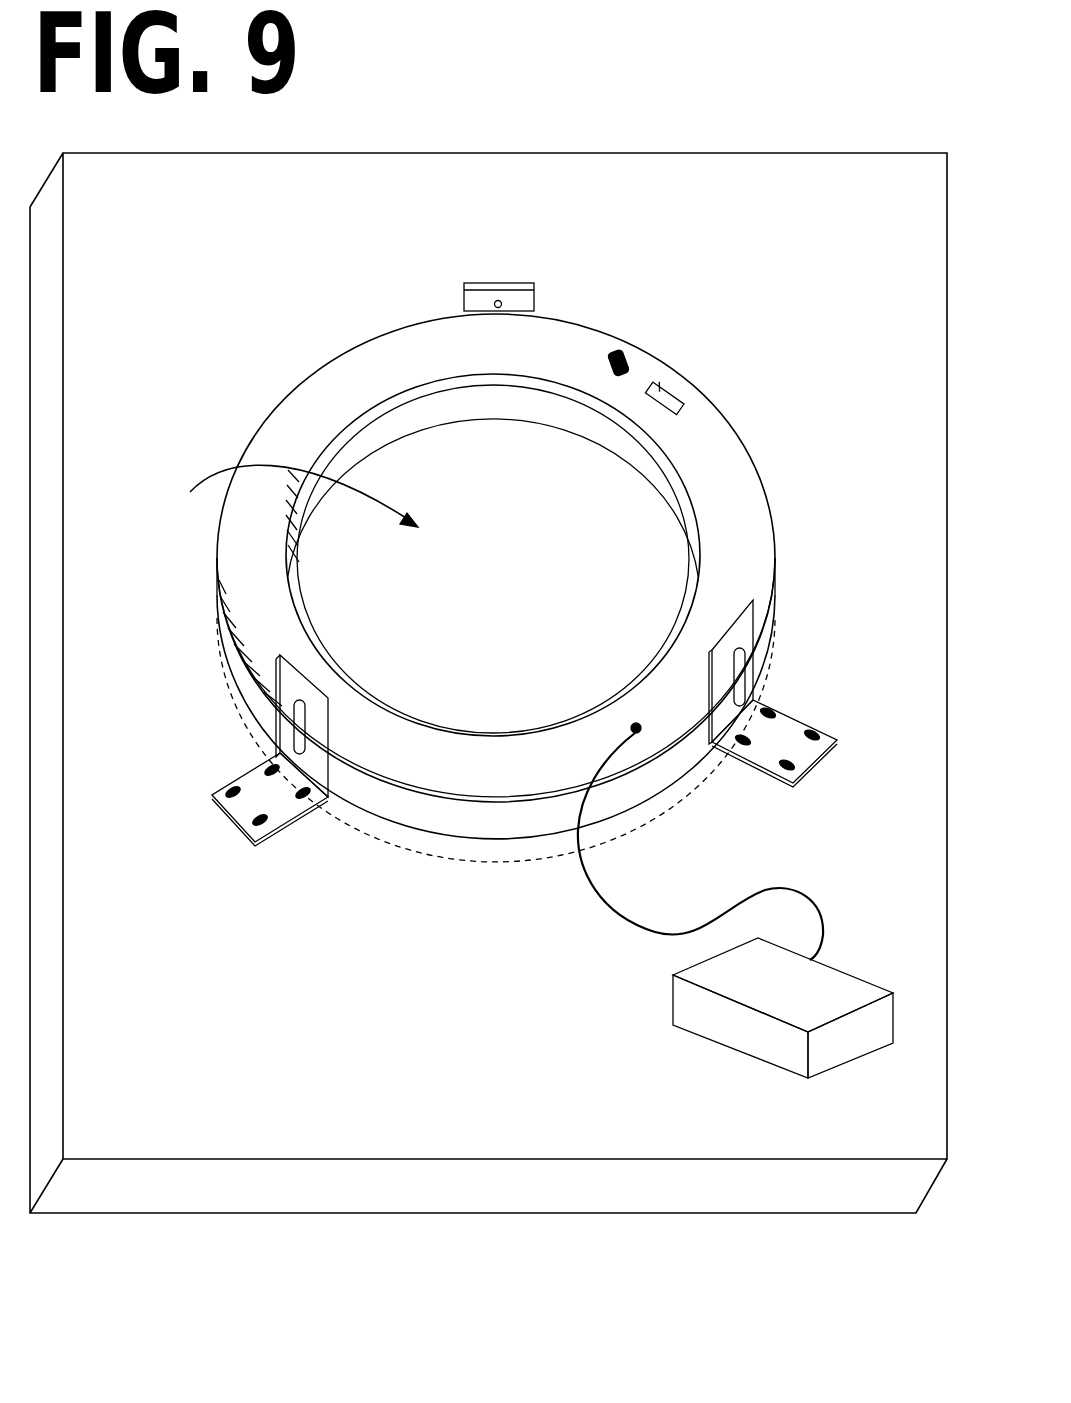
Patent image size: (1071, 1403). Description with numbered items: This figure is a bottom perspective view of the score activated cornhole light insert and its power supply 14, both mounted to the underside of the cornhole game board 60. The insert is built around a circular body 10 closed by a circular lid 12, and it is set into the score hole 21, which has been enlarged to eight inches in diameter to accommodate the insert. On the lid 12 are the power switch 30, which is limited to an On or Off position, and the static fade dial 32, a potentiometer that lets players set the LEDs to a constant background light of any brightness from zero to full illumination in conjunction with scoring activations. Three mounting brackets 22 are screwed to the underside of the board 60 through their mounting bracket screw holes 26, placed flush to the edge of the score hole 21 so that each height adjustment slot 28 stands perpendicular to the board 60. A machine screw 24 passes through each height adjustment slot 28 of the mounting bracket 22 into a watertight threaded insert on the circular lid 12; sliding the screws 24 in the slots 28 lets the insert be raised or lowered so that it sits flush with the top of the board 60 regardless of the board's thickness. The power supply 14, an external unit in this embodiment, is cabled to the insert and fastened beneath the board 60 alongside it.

The circular body 10 is at (562, 418).
The circular lid 12 is at (362, 372).
The power supply 14 is at (767, 1037).
The score hole 21 is at (277, 497).
The mounting bracket 22 is at (520, 577).
The machine screw 24 is at (292, 800).
The mounting bracket screw hole 26 is at (212, 798).
The height adjustment slot 28 is at (449, 304).
The power switch 30 is at (690, 412).
The static fade dial 32 is at (640, 360).
The cornhole game board 60 is at (202, 983).